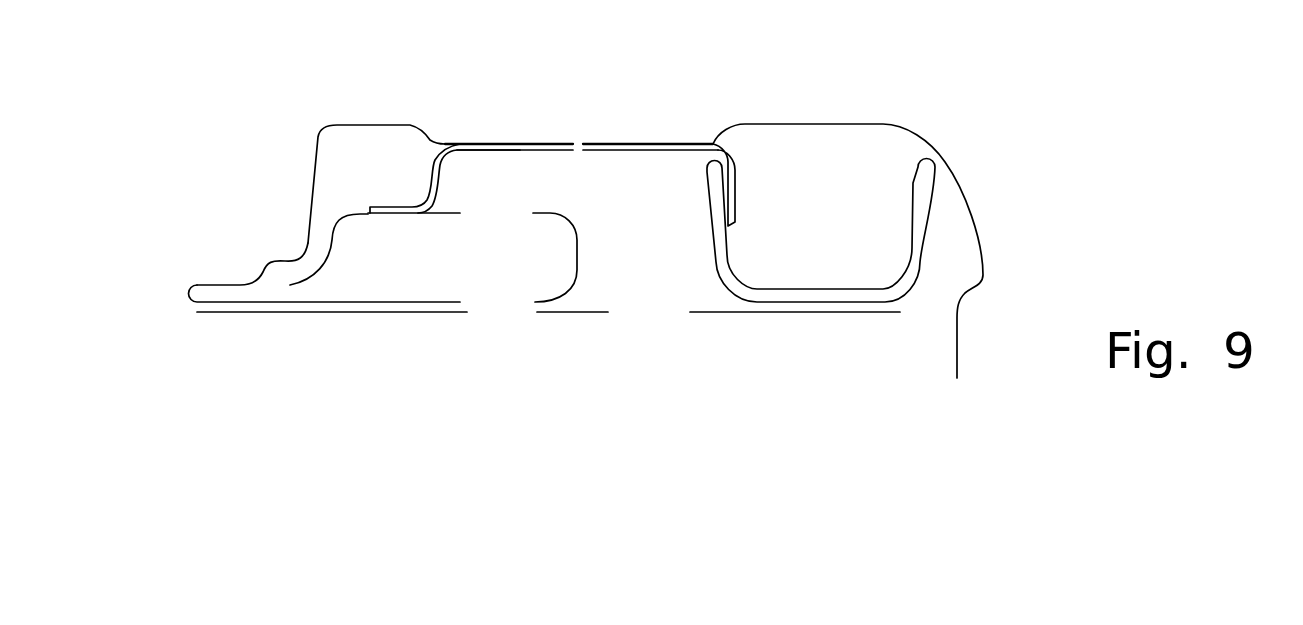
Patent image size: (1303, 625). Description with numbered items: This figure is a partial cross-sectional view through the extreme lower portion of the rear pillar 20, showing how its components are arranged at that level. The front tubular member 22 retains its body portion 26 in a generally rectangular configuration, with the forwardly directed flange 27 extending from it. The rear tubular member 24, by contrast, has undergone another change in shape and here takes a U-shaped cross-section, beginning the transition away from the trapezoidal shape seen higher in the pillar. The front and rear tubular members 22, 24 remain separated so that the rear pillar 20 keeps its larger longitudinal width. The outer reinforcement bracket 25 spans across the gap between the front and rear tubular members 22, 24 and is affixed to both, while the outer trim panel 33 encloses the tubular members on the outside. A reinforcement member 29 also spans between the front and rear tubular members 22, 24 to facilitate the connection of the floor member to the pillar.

The rear pillar 20 is at (808, 77).
The front tubular member 22 is at (328, 237).
The rear tubular member 24 is at (917, 222).
The outer reinforcement bracket 25 is at (440, 172).
The body portion 26 is at (430, 215).
The forwardly directed flange 27 is at (278, 295).
The reinforcement member 29 is at (760, 313).
The outer trim panel 33 is at (431, 137).